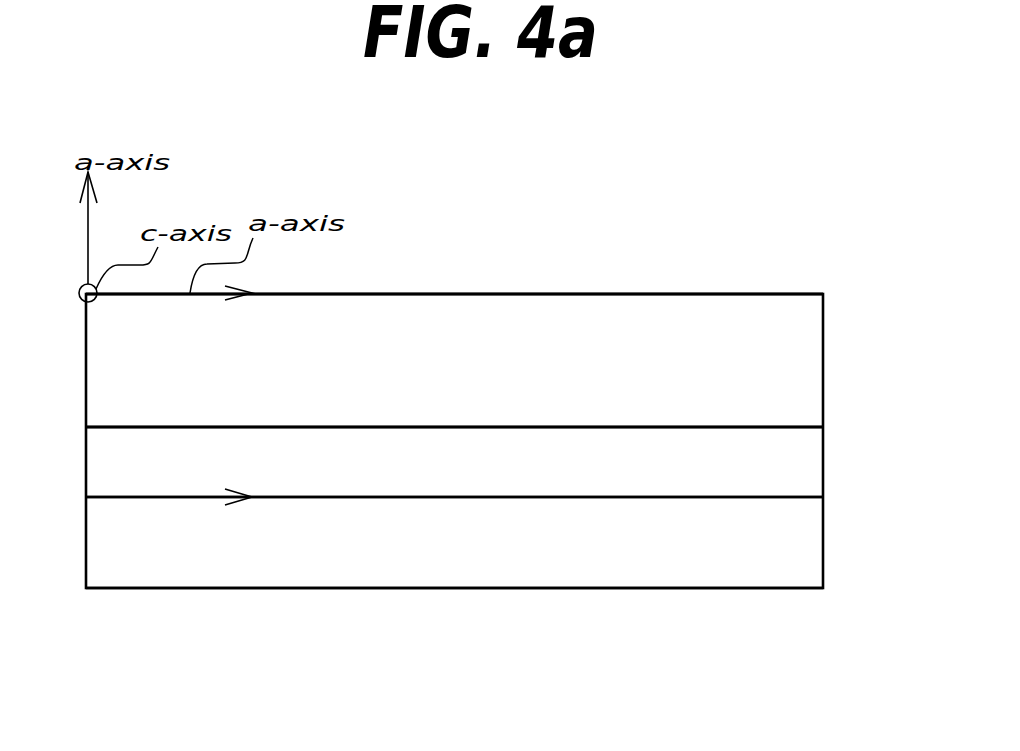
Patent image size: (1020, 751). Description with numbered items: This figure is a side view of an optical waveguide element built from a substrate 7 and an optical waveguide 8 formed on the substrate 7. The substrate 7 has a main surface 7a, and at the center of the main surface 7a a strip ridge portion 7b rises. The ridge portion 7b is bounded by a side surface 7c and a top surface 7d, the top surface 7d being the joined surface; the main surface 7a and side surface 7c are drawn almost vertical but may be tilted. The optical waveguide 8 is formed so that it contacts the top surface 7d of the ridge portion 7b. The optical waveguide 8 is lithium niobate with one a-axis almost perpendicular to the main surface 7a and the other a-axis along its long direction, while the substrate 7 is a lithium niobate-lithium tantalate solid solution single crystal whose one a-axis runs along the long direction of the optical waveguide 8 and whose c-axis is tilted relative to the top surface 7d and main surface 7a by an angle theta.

The substrate 7 is at (780, 545).
The main surface 7a is at (537, 548).
The ridge portion 7b is at (755, 465).
The side surface 7c is at (805, 447).
The top surface 7d is at (628, 427).
The optical waveguide 8 is at (539, 292).